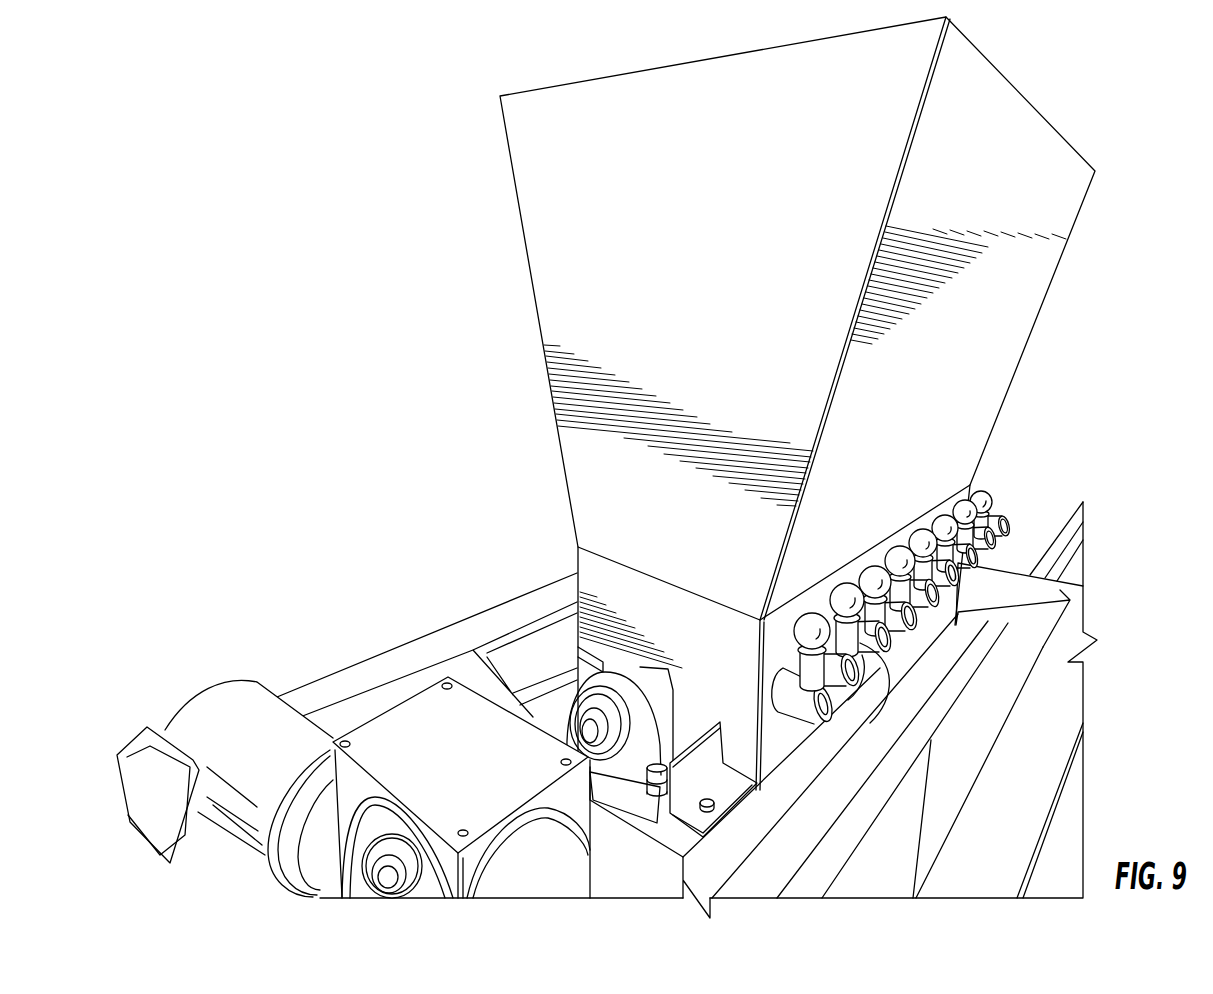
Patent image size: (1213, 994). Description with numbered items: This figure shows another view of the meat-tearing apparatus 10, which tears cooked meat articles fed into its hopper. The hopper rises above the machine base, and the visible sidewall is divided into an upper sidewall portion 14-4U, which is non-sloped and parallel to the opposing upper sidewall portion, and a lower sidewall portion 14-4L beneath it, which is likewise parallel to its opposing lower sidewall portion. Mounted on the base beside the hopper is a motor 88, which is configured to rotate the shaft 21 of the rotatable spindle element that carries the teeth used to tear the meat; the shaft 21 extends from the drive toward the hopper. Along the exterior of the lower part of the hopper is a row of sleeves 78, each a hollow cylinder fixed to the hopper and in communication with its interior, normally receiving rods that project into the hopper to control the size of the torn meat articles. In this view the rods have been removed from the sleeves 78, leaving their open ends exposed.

The meat-tearing apparatus 10 is at (453, 127).
The upper sidewall portion 14-4U is at (742, 264).
The lower sidewall portion 14-4L is at (737, 644).
The motor 88 is at (243, 700).
The shaft 21 is at (388, 884).
The sleeve 78 is at (855, 690).